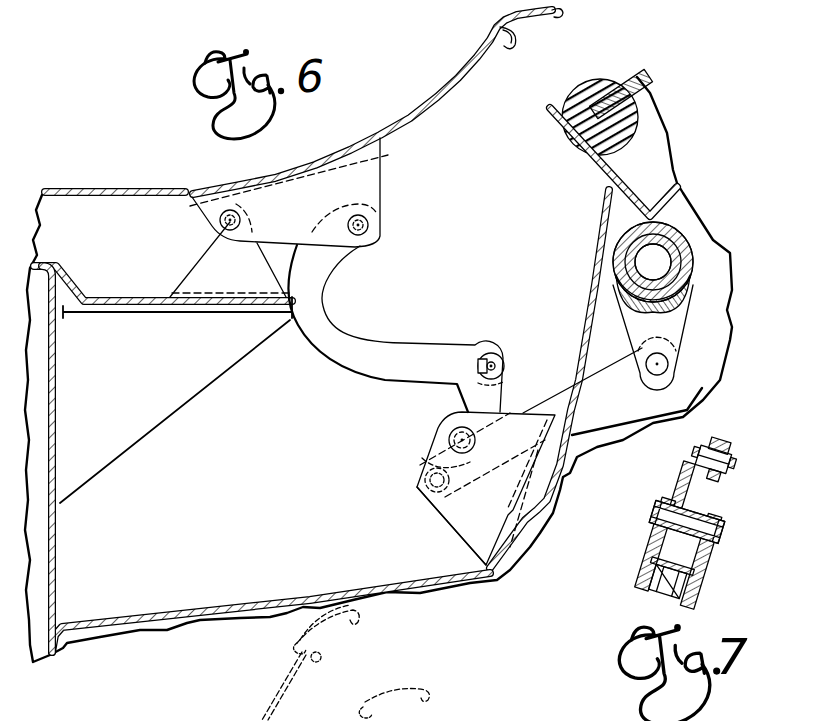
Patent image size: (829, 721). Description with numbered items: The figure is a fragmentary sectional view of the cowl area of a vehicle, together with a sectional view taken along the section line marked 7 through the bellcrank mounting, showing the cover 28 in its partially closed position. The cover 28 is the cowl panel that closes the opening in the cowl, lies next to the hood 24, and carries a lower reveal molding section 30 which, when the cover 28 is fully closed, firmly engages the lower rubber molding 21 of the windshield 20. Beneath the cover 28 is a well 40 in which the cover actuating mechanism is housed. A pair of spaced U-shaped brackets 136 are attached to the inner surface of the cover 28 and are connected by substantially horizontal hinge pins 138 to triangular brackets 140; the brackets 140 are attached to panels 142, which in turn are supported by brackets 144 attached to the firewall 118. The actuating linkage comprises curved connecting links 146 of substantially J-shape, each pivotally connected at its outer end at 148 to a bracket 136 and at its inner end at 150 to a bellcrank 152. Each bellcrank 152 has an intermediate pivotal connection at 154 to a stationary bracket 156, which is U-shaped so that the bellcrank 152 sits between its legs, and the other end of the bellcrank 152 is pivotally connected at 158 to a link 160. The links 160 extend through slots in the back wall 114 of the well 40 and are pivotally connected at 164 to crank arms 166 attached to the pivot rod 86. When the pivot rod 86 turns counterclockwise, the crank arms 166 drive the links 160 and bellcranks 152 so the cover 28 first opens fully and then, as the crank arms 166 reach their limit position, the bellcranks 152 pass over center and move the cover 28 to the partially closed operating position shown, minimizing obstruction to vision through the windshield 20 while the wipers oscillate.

In FIG. 6, the windshield 20 is at (640, 80).
In FIG. 6, the lower rubber molding 21 is at (597, 81).
In FIG. 6, the hood 24 is at (135, 189).
In FIG. 6, the cover 28 is at (477, 62).
In FIG. 6, the lower reveal molding section 30 is at (475, 361).
In FIG. 6, the well 40 is at (60, 201).
In FIG. 6, the pivot rod 86 is at (690, 272).
In FIG. 6, the back wall 114 is at (604, 214).
In FIG. 6, the firewall 118 is at (52, 559).
In FIG. 6, the U-shaped bracket 136 is at (381, 157).
In FIG. 6, the hinge pin 138 is at (220, 224).
In FIG. 6, the triangular bracket 140 is at (196, 262).
In FIG. 6, the panel 142 is at (155, 300).
In FIG. 6, the bracket 144 is at (132, 446).
In FIG. 6, the curved connecting link 146 is at (333, 322).
In FIG. 7, the curved connecting link 146 is at (718, 450).
In FIG. 6, the pivotal connection 148 is at (369, 229).
In FIG. 6, the pivotal connection 150 is at (506, 369).
In FIG. 7, the pivotal connection 150 is at (728, 460).
In FIG. 6, the bellcrank 152 is at (462, 394).
In FIG. 7, the bellcrank 152 is at (686, 480).
In FIG. 6, the intermediate pivotal connection 154 is at (449, 440).
In FIG. 7, the intermediate pivotal connection 154 is at (722, 532).
In FIG. 6, the stationary bracket 156 is at (468, 553).
In FIG. 7, the stationary bracket 156 is at (700, 578).
In FIG. 6, the pivotal connection 158 is at (425, 485).
In FIG. 7, the pivotal connection 158 is at (655, 578).
In FIG. 6, the link 160 is at (604, 371).
In FIG. 7, the link 160 is at (660, 603).
In FIG. 6, the pivotal connection 164 is at (657, 377).
In FIG. 6, the crank arm 166 is at (672, 323).
In FIG. 6, the section line 7 is at (503, 345).